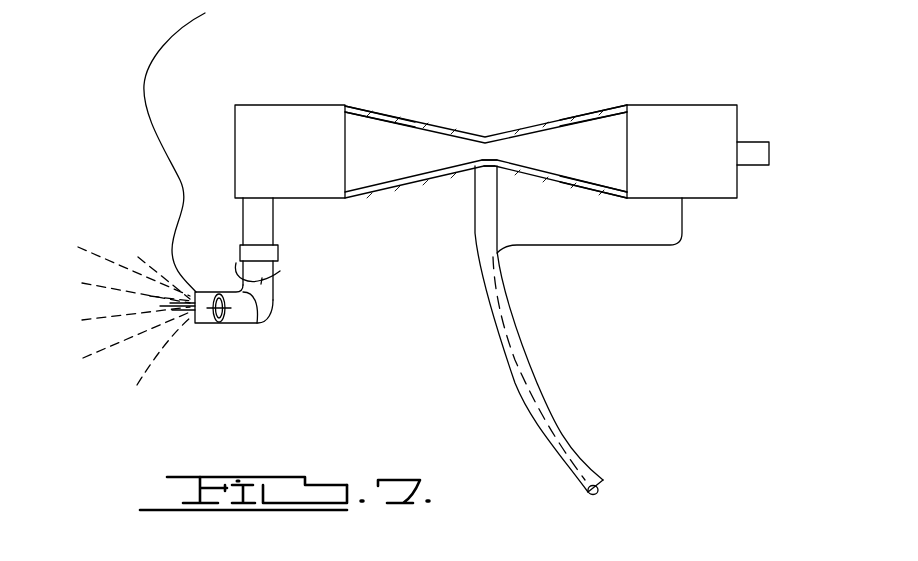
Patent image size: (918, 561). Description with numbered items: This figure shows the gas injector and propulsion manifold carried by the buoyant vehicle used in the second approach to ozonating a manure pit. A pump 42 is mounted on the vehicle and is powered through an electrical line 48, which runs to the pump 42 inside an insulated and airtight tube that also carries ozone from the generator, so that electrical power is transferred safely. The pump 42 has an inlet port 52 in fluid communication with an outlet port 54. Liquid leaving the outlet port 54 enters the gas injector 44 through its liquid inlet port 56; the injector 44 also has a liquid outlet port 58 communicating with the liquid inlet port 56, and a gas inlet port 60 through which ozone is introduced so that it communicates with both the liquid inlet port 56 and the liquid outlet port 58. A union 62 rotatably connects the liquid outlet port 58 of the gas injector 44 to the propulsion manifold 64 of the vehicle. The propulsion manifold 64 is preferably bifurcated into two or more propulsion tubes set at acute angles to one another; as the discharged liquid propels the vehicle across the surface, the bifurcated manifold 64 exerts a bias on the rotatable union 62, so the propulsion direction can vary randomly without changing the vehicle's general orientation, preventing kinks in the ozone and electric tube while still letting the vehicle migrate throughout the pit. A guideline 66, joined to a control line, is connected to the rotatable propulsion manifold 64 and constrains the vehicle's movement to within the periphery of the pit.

The pump 42 is at (732, 118).
The gas injector 44 is at (530, 128).
The electrical line 48 is at (500, 323).
The inlet port 52 is at (760, 157).
The outlet port 54 is at (628, 130).
The liquid inlet port 56 is at (622, 167).
The liquid outlet port 58 is at (347, 137).
The gas inlet port 60 is at (483, 165).
The union 62 is at (270, 252).
The propulsion manifold 64 is at (260, 312).
The guideline 66 is at (149, 62).